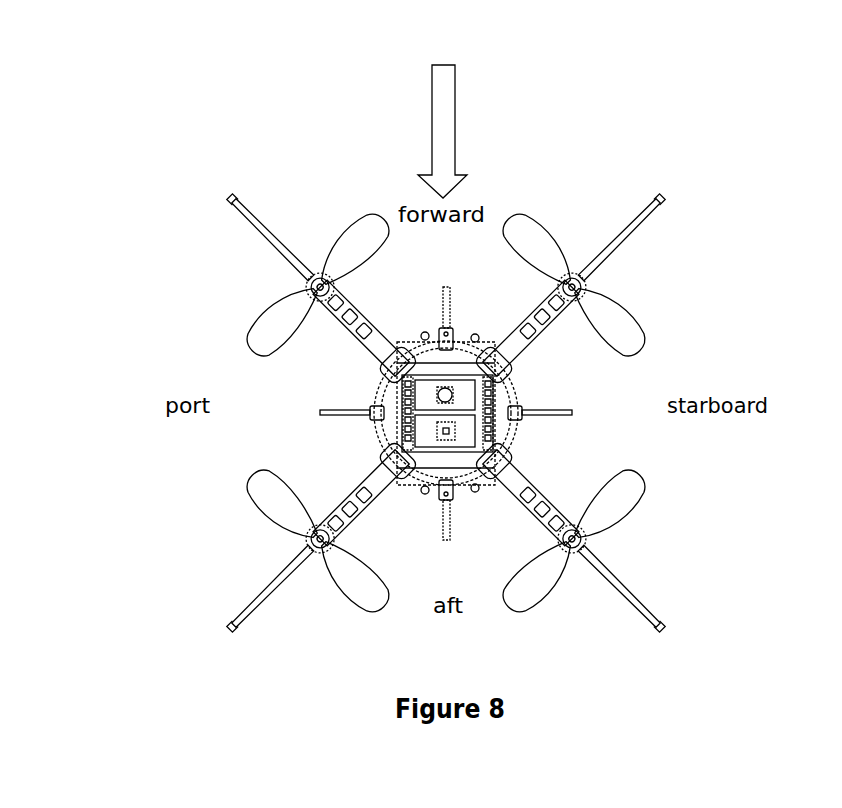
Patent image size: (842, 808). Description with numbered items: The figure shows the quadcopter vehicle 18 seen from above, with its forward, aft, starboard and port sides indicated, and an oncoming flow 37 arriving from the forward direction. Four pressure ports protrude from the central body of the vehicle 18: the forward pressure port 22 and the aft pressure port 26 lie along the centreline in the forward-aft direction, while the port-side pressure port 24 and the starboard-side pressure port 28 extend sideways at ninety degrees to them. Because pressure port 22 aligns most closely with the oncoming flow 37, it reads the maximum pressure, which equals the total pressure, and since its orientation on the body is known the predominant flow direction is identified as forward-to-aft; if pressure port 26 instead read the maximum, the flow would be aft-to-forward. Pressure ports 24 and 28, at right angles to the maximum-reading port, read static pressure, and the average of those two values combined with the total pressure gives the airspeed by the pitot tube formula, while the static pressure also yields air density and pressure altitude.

The vehicle 18 is at (160, 312).
The pressure port 22 is at (445, 318).
The pressure port 24 is at (344, 413).
The pressure port 26 is at (452, 512).
The pressure port 28 is at (545, 413).
The oncoming flow 37 is at (432, 93).